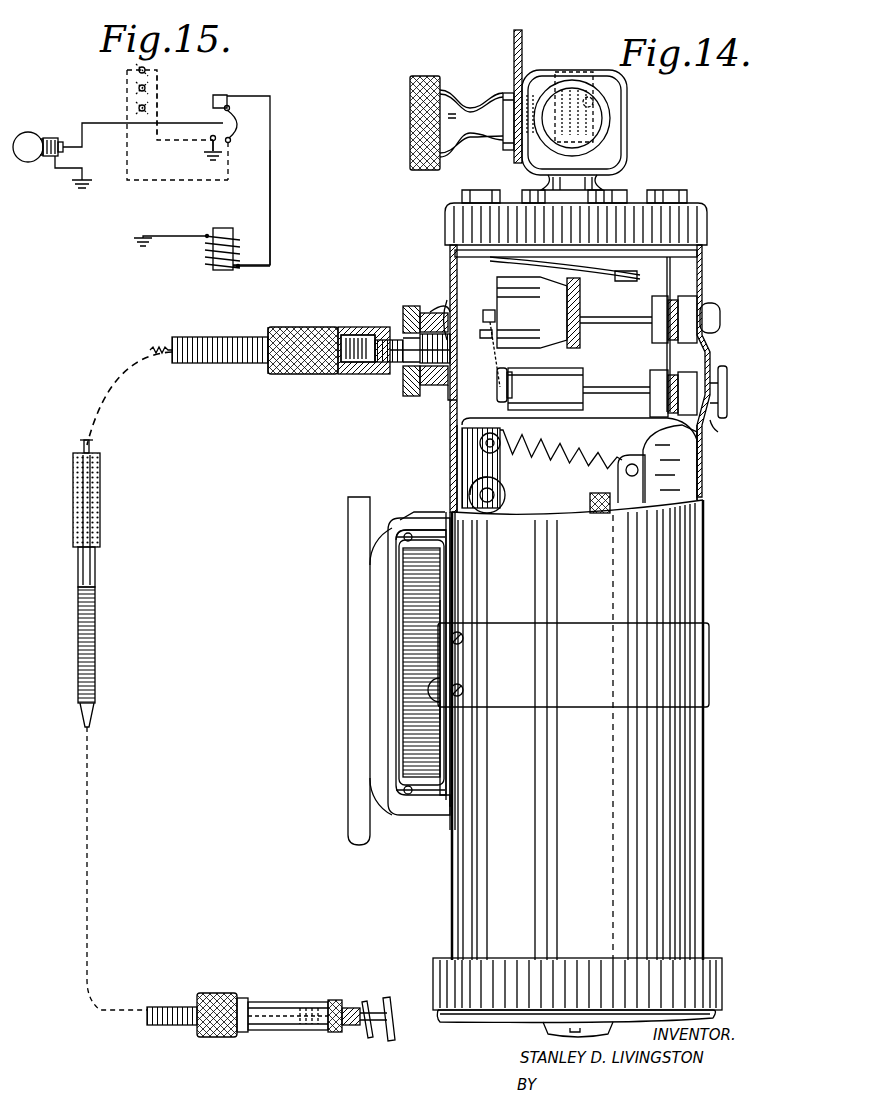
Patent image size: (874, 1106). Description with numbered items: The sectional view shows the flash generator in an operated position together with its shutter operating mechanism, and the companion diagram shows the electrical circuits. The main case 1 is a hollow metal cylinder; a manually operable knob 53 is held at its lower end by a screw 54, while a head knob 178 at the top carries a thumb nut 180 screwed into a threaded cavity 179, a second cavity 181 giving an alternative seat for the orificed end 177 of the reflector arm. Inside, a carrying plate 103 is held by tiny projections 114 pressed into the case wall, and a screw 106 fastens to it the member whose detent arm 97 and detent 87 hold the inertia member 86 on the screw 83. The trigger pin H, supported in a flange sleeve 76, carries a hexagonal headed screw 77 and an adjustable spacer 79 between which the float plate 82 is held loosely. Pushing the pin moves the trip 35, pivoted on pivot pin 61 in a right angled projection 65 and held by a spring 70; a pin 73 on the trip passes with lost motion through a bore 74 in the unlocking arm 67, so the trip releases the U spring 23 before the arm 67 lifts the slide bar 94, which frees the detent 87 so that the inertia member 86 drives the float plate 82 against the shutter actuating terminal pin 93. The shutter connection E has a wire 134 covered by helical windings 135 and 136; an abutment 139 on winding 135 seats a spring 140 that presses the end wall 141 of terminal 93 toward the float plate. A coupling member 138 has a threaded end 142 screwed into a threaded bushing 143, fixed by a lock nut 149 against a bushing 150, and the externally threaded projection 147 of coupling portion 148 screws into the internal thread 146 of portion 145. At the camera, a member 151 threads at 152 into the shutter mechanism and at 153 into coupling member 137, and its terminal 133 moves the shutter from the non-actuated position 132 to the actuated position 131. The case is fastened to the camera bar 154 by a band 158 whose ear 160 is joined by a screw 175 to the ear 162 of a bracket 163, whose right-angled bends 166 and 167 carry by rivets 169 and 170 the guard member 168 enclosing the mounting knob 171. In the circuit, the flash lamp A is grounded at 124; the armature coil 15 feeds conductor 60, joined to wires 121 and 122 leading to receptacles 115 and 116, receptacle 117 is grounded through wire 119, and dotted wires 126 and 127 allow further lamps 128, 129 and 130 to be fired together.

In FIG. 15, the flash lamp A is at (30, 133).
In FIG. 15, the grounded side 124 is at (58, 162).
In FIG. 15, the dotted wire 126 is at (115, 66).
In FIG. 15, the dotted wire 127 is at (162, 72).
In FIG. 15, the flash lamp 128 is at (135, 88).
In FIG. 15, the flash lamp 129 is at (135, 108).
In FIG. 15, the flash lamp 130 is at (152, 106).
In FIG. 15, the wire 121 is at (236, 88).
In FIG. 15, the plug receiving insulating receptacle 115 is at (246, 112).
In FIG. 15, the wire 122 is at (238, 143).
In FIG. 15, the plug receiving insulating receptacle 116 is at (231, 160).
In FIG. 15, the plug receiving insulating receptacle 117 is at (210, 142).
In FIG. 15, the wire 119 is at (208, 158).
In FIG. 15, the conductor 60 is at (270, 204).
In FIG. 15, the armature coil 15 is at (207, 256).
In FIG. 14, the thumb nut 180 is at (415, 76).
In FIG. 14, the orifice 177 is at (505, 93).
In FIG. 14, the head knob 178 is at (627, 135).
In FIG. 14, the cavity 179 is at (565, 80).
In FIG. 14, the cavity 181 is at (595, 103).
In FIG. 14, the screw 106 is at (450, 240).
In FIG. 14, the carrying plate 103 is at (556, 250).
In FIG. 14, the detent arm 97 is at (697, 262).
In FIG. 14, the projection 114 is at (585, 272).
In FIG. 14, the detent 87 is at (622, 281).
In FIG. 14, the inertia member 86 is at (532, 312).
In FIG. 14, the float plate 82 is at (489, 310).
In FIG. 14, the shutter actuating terminal pin 93 is at (480, 330).
In FIG. 14, the screw 83 is at (720, 318).
In FIG. 14, the spacer member 79 is at (580, 380).
In FIG. 14, the trigger pin H is at (728, 383).
In FIG. 14, the flange sleeve 76 is at (712, 422).
In FIG. 14, the bore 74 is at (475, 430).
In FIG. 14, the hexagonal headed screw 77 is at (482, 443).
In FIG. 14, the trip 35 is at (570, 475).
In FIG. 14, the spring 70 is at (622, 465).
In FIG. 14, the slide bar 94 is at (705, 445).
In FIG. 14, the unlocking arm 67 is at (680, 470).
In FIG. 14, the pin 73 is at (465, 482).
In FIG. 14, the pivot pin 61 is at (490, 505).
In FIG. 14, the right angled projection 65 is at (515, 520).
In FIG. 14, the U spring 23 is at (600, 515).
In FIG. 14, the main case 1 is at (703, 590).
In FIG. 14, the band 158 is at (582, 625).
In FIG. 14, the screw 175 is at (465, 690).
In FIG. 14, the ear 160 is at (460, 710).
In FIG. 14, the ear 162 is at (455, 720).
In FIG. 14, the bracket 163 is at (455, 770).
In FIG. 14, the bar 154 is at (350, 580).
In FIG. 14, the guard member 168 is at (385, 775).
In FIG. 14, the mounting knob 171 is at (403, 608).
In FIG. 14, the rivet 169 is at (392, 535).
In FIG. 14, the right-angled bend 166 is at (408, 520).
In FIG. 14, the rivet 170 is at (412, 798).
In FIG. 14, the right-angled bend 167 is at (398, 800).
In FIG. 14, the manually operable knob 53 is at (725, 975).
In FIG. 14, the screw 54 is at (545, 1025).
In FIG. 14, the coupling portion 148 is at (270, 330).
In FIG. 14, the externally threaded projection 147 is at (340, 330).
In FIG. 14, the coupling portion 145 is at (350, 334).
In FIG. 14, the internal thread 146 is at (366, 334).
In FIG. 14, the coupling member 138 is at (337, 372).
In FIG. 14, the end wall 141 is at (385, 372).
In FIG. 14, the threaded bushing 143 is at (405, 306).
In FIG. 14, the lock nut 149 is at (405, 396).
In FIG. 14, the bushing 150 is at (440, 305).
In FIG. 14, the screw-threaded end 142 is at (447, 396).
In FIG. 14, the spring 140 is at (95, 446).
In FIG. 14, the wire 134 is at (84, 440).
In FIG. 14, the abutment 139 is at (100, 476).
In FIG. 14, the helical winding 136 is at (100, 510).
In FIG. 14, the helical winding 135 is at (78, 645).
In FIG. 14, the shutter operating means E is at (98, 661).
In FIG. 14, the coupling member 137 is at (247, 1000).
In FIG. 14, the screw thread 153 is at (305, 1028).
In FIG. 14, the member 151 is at (333, 1000).
In FIG. 14, the screw-threaded end 152 is at (352, 1008).
In FIG. 14, the terminal 133 is at (378, 1012).
In FIG. 14, the non-actuated position 132 is at (365, 1038).
In FIG. 14, the actuated position 131 is at (395, 1010).